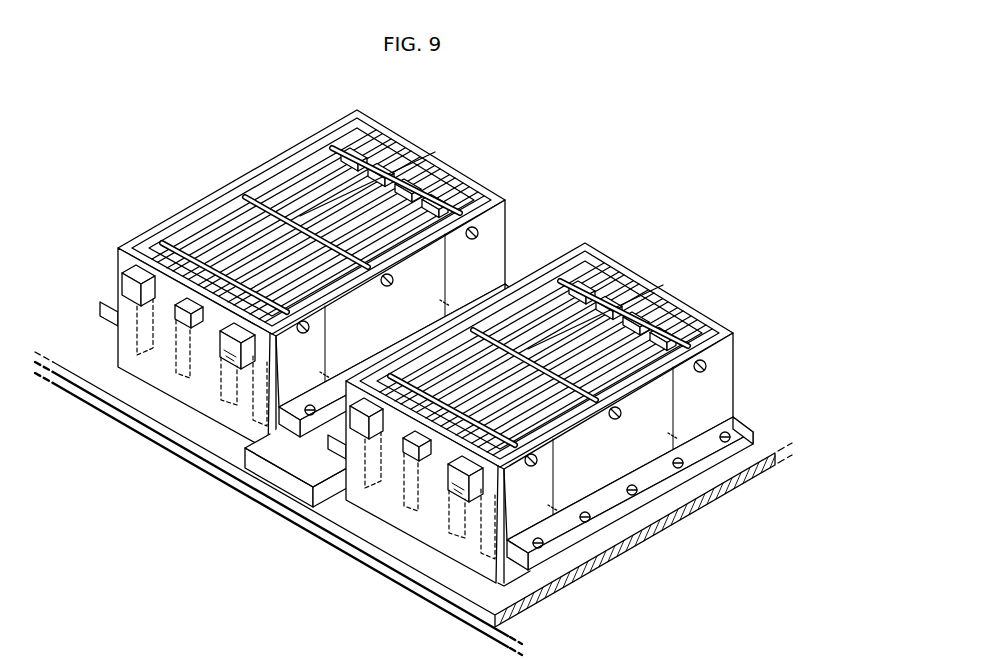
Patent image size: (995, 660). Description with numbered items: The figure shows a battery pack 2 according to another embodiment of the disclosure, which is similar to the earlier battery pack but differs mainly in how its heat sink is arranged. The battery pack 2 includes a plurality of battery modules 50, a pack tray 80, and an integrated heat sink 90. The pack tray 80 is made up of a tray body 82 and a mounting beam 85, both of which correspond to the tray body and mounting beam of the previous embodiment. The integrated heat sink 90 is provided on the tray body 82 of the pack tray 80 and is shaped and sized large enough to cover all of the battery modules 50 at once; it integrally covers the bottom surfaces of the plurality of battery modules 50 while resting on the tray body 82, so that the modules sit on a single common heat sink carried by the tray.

The battery pack 2 is at (598, 137).
The battery modules 50 is at (437, 148).
The pack tray 80 is at (156, 469).
The tray body 82 is at (231, 480).
The mounting beam 85 is at (281, 489).
The integrated heat sink 90 is at (148, 401).